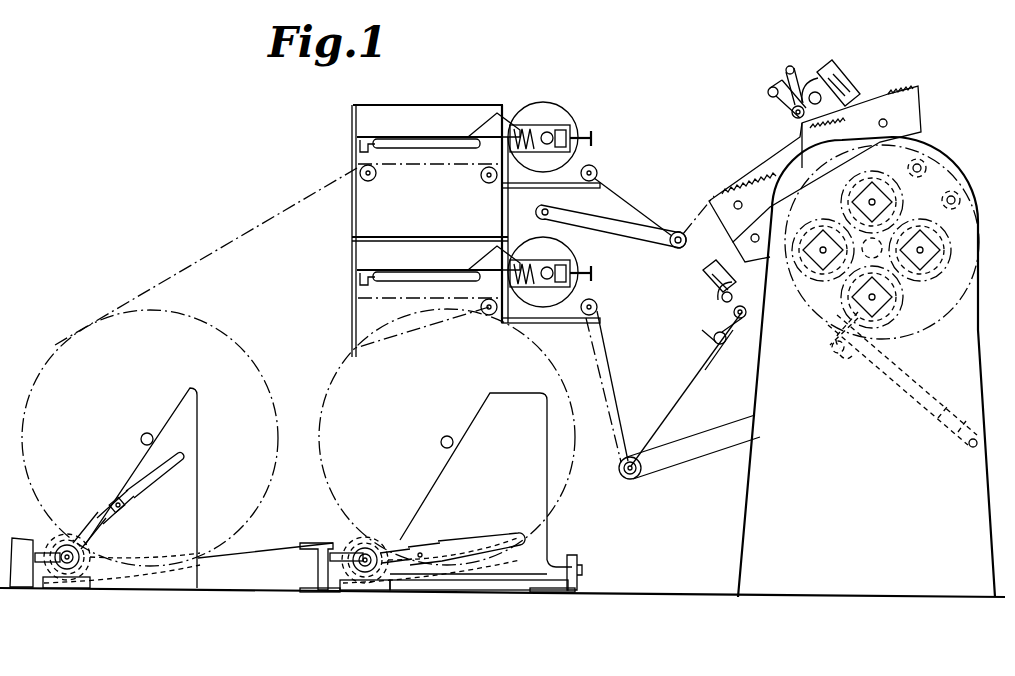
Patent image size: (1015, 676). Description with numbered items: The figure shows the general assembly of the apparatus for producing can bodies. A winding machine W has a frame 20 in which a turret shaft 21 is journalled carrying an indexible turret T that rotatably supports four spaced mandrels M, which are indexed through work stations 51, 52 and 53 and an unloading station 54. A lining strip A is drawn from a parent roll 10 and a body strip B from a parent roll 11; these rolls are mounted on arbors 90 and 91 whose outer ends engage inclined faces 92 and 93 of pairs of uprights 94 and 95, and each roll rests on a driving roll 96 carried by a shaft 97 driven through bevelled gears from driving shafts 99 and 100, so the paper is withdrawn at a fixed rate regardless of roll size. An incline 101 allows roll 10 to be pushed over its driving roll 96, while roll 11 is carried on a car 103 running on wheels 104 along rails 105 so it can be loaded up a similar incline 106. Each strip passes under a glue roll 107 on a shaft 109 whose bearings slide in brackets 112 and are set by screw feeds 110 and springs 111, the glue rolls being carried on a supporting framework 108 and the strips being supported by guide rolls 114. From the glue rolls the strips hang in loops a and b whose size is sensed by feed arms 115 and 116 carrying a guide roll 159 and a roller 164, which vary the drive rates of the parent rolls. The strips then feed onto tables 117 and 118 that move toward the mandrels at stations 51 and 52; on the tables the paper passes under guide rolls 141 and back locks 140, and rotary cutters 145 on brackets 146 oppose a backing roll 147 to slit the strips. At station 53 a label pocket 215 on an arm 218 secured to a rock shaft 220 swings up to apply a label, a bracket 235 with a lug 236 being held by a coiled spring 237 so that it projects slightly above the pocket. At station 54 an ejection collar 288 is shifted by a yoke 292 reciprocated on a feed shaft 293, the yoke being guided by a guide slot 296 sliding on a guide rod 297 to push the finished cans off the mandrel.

The parent roll 10 is at (205, 322).
The parent roll 11 is at (336, 370).
The frame 20 is at (740, 550).
The turret shaft 21 is at (862, 258).
The work station 51 is at (872, 185).
The work station 52 is at (810, 272).
The work station 53 is at (905, 320).
The unloading station 54 is at (946, 250).
The arbor 90 is at (140, 439).
The arbor 91 is at (440, 444).
The inclined face 92 is at (168, 418).
The inclined face 93 is at (476, 420).
The upright 94 is at (141, 488).
The upright 95 is at (486, 480).
The driving roll 96 is at (50, 540).
The shaft 97 is at (65, 580).
The driving shaft 99 is at (129, 487).
The driving shaft 100 is at (483, 540).
The incline 101 is at (30, 554).
The car 103 is at (500, 586).
The wheels 104 is at (318, 570).
The rails 105 is at (338, 592).
The incline 106 is at (300, 543).
The glue roll 107 is at (572, 125).
The frame 108 is at (476, 231).
The shaft 109 is at (552, 122).
The screw feed 110 is at (594, 138).
The spring 111 is at (545, 130).
The bracket 112 is at (500, 112).
The guide roll 114 is at (481, 180).
The feed arm 115 is at (658, 240).
The feed arm 116 is at (708, 442).
The feed table 117 is at (768, 108).
The feed table 118 is at (715, 355).
The back lock 140 is at (788, 68).
The guide roll 141 is at (768, 92).
The rotary cutter 145 is at (808, 82).
The bracket 146 is at (848, 85).
The backing roll 147 is at (796, 119).
The guide roll 159 is at (676, 232).
The roller 164 is at (629, 478).
The label pocket 215 is at (888, 372).
The arm 218 is at (950, 430).
The rock shaft 220 is at (970, 450).
The bracket 235 is at (835, 335).
The lug 236 is at (832, 350).
The coiled spring 237 is at (845, 360).
The ejection collar 288 is at (950, 262).
The yoke 292 is at (962, 215).
The feed shaft 293 is at (960, 197).
The guide slot 296 is at (935, 175).
The guide rod 297 is at (924, 163).
The lining strip A is at (192, 265).
The body strip B is at (612, 392).
The mandrel M is at (862, 200).
The turret T is at (945, 282).
The winding machine W is at (808, 595).
The depending loop a is at (640, 212).
The depending loop b is at (622, 462).